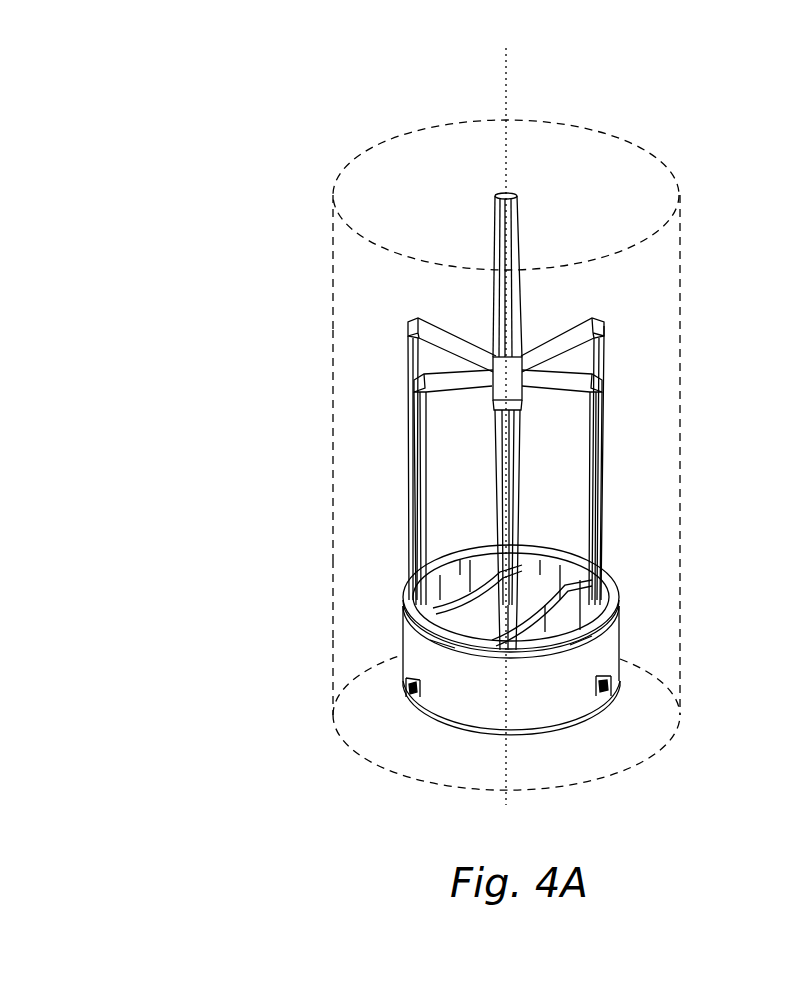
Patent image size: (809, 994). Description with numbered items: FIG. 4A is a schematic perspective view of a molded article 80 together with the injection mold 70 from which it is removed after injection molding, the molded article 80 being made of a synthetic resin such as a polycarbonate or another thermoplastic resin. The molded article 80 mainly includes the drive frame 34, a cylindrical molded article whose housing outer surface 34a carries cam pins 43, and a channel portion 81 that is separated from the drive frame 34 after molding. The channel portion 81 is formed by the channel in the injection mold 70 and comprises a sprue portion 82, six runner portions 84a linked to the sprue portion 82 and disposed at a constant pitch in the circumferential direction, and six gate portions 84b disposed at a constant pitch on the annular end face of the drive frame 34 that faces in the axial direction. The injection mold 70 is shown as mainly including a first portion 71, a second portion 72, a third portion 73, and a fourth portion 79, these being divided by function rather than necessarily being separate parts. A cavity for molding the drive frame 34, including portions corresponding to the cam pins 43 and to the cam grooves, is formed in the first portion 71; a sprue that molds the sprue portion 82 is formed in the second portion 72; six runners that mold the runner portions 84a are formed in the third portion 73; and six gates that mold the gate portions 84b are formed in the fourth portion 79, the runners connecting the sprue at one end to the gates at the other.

The injection mold 70 is at (676, 155).
The second portion 72 is at (333, 248).
The third portion 73 is at (335, 412).
The fourth portion 79 is at (337, 583).
The first portion 71 is at (333, 690).
The sprue portion 82 is at (487, 208).
The molded article 80 is at (620, 303).
The runner portions 84a is at (308, 465).
The channel portion 81 is at (620, 363).
The gate portions 84b is at (410, 628).
The drive frame 34 is at (606, 728).
The housing outer surface 34a is at (530, 708).
The cam pins 43 is at (402, 695).